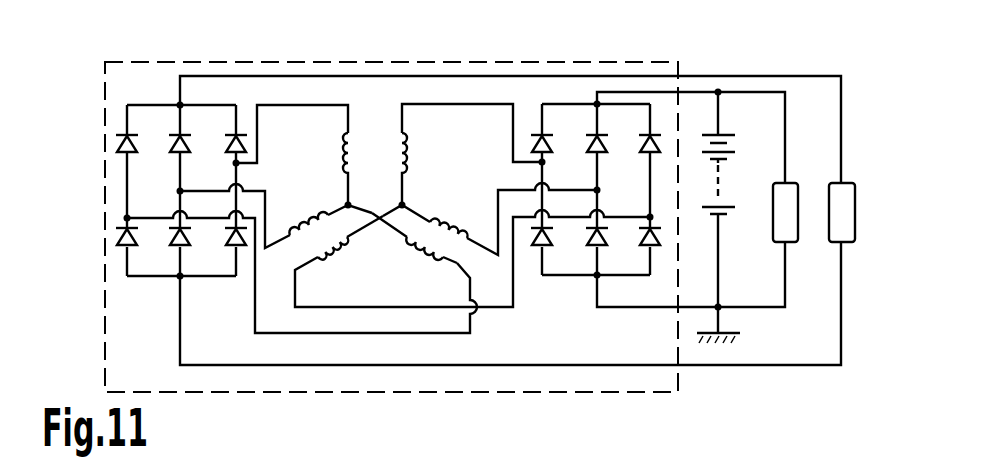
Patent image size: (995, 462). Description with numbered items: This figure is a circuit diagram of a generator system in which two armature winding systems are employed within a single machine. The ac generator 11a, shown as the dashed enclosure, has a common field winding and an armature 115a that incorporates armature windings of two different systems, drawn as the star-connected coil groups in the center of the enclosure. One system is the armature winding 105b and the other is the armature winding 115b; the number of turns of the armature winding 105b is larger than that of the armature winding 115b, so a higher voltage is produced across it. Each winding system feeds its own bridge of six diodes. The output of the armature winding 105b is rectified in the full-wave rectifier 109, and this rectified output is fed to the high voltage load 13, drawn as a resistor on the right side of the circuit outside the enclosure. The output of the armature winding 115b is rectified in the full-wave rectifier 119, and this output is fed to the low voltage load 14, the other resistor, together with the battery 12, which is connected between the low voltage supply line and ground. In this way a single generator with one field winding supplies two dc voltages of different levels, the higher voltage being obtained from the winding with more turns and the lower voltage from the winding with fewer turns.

The ac generator 11a is at (563, 393).
The full-wave rectifier 109 is at (154, 278).
The full-wave rectifier 119 is at (623, 278).
The armature 115a is at (375, 125).
The armature winding 115b is at (316, 256).
The armature winding 105b is at (468, 262).
The battery 12 is at (733, 210).
The high voltage load 13 is at (845, 235).
The low voltage load 14 is at (790, 238).